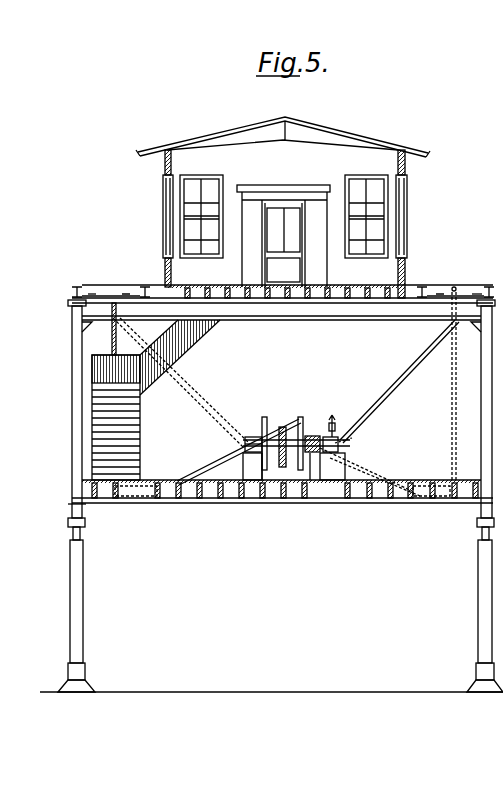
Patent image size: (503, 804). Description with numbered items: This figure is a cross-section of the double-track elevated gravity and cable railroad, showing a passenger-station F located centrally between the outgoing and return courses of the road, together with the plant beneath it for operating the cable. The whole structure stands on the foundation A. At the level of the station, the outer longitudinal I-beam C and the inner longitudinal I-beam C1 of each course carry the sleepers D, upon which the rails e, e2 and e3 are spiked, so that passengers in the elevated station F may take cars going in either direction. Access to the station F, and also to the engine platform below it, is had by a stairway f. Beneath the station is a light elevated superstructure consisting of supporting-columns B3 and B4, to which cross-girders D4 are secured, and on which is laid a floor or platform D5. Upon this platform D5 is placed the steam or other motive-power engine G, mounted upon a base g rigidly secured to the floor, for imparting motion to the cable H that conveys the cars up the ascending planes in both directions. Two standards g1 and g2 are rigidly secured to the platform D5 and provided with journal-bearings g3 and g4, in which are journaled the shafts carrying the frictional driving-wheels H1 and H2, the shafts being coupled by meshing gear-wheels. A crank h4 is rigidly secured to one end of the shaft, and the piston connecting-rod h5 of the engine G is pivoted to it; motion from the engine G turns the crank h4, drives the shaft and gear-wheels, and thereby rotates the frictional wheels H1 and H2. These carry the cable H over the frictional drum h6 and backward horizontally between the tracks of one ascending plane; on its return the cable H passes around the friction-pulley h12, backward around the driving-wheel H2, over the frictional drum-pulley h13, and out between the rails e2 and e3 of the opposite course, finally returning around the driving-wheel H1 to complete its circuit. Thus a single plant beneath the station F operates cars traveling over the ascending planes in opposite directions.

The elevated passenger-station F is at (284, 168).
The foundation A is at (271, 683).
The supporting-column B3 is at (84, 562).
The supporting-column B4 is at (478, 552).
The outer longitudinal I-beam C is at (76, 286).
The inner longitudinal I-beam C1 is at (145, 286).
The sleepers D is at (105, 294).
The cross-girders D4 is at (70, 506).
The floor or platform D5 is at (153, 496).
The rail e is at (92, 294).
The rail e2 is at (128, 294).
The rail e3 is at (477, 294).
The stairway f is at (200, 338).
The steam or other motive-power engine G is at (335, 418).
The base g is at (352, 452).
The standard g1 is at (312, 503).
The standard g2 is at (262, 503).
The journal-bearing g3 is at (313, 436).
The journal-bearing g4 is at (254, 437).
The cable H is at (112, 341).
The frictional driving-wheel H1 is at (264, 417).
The frictional driving-wheel H2 is at (303, 417).
The friction-pulley h12 is at (113, 300).
The frictional drum-pulley h13 is at (438, 498).
The crank h4 is at (366, 440).
The piston connecting-rod h5 is at (282, 466).
The frictional drum h6 is at (134, 498).